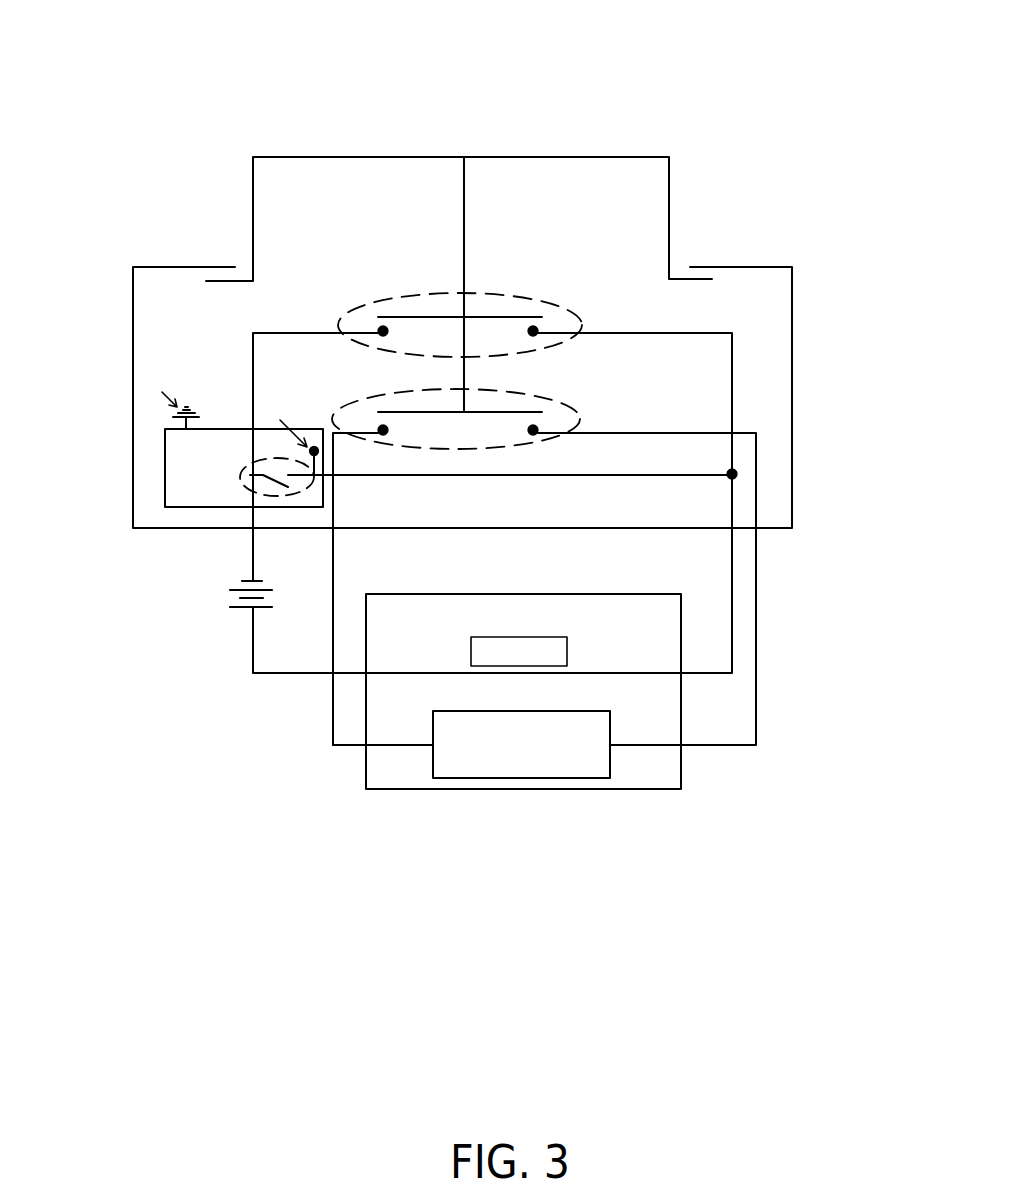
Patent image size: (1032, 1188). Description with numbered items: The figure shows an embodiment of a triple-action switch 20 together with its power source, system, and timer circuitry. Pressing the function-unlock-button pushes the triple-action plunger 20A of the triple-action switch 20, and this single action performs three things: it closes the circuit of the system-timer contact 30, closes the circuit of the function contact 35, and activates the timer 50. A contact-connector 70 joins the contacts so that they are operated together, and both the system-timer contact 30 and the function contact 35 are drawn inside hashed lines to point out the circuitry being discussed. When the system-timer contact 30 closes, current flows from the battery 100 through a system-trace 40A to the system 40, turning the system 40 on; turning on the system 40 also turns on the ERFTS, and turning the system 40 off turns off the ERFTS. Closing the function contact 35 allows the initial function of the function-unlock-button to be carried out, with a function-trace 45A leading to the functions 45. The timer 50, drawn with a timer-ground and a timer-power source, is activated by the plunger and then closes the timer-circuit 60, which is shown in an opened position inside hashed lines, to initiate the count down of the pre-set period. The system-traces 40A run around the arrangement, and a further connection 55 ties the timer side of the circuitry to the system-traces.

The triple-action switch 20 is at (180, 200).
The triple-action plunger 20A is at (302, 157).
The contact-connector 70 is at (463, 199).
The system-timer contact 30 is at (563, 304).
The function contact 35 is at (558, 402).
The system-trace 40A is at (707, 332).
The connection line 55 is at (642, 473).
The timer 50 is at (165, 431).
The timer-circuit 60 is at (240, 488).
The battery 100 is at (208, 613).
The system 40 is at (447, 790).
The functions 45 is at (612, 755).
The function-trace 45A is at (333, 720).